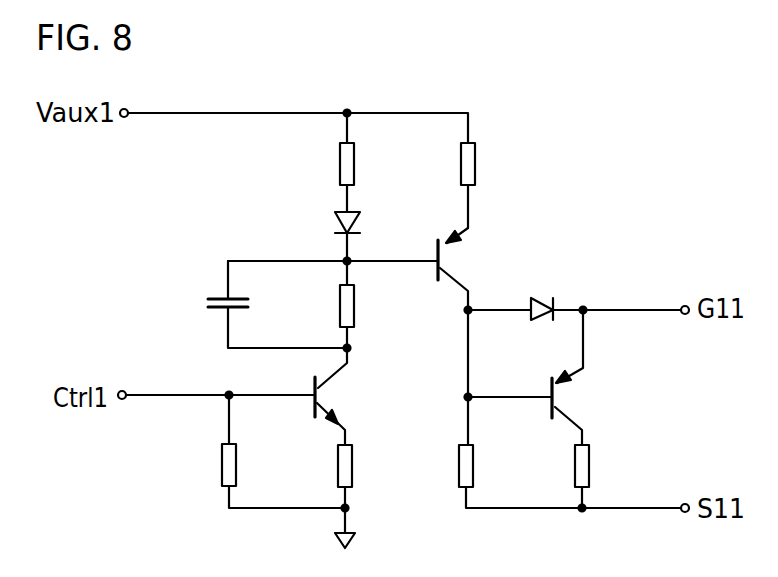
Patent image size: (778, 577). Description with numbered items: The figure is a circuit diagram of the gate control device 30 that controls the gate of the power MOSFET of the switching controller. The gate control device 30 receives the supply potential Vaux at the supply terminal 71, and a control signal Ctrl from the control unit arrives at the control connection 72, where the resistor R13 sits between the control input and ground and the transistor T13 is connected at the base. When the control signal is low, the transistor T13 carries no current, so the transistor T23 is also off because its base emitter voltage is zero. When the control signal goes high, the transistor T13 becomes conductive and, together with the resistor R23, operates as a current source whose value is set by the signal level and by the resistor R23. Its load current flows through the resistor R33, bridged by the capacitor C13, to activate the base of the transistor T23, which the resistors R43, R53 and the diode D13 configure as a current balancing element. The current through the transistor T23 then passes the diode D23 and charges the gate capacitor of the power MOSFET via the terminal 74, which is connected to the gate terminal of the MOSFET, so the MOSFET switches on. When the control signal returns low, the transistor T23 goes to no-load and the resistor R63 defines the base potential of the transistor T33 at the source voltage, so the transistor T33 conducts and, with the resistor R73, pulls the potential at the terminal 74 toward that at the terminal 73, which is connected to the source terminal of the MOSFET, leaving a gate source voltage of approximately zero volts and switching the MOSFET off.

The gate control device 30 is at (618, 108).
The supply terminal 71 is at (124, 119).
The control connection 72 is at (121, 390).
The terminal 73 is at (687, 503).
The terminal 74 is at (687, 305).
The resistor R13 is at (222, 462).
The resistor R23 is at (338, 458).
The resistor R33 is at (340, 297).
The resistor R43 is at (340, 160).
The resistor R53 is at (476, 158).
The resistor R63 is at (473, 462).
The resistor R73 is at (589, 462).
The capacitor C13 is at (208, 303).
The diode D13 is at (335, 213).
The diode D23 is at (538, 297).
The transistor T13 is at (326, 399).
The transistor T23 is at (446, 257).
The transistor T33 is at (560, 397).